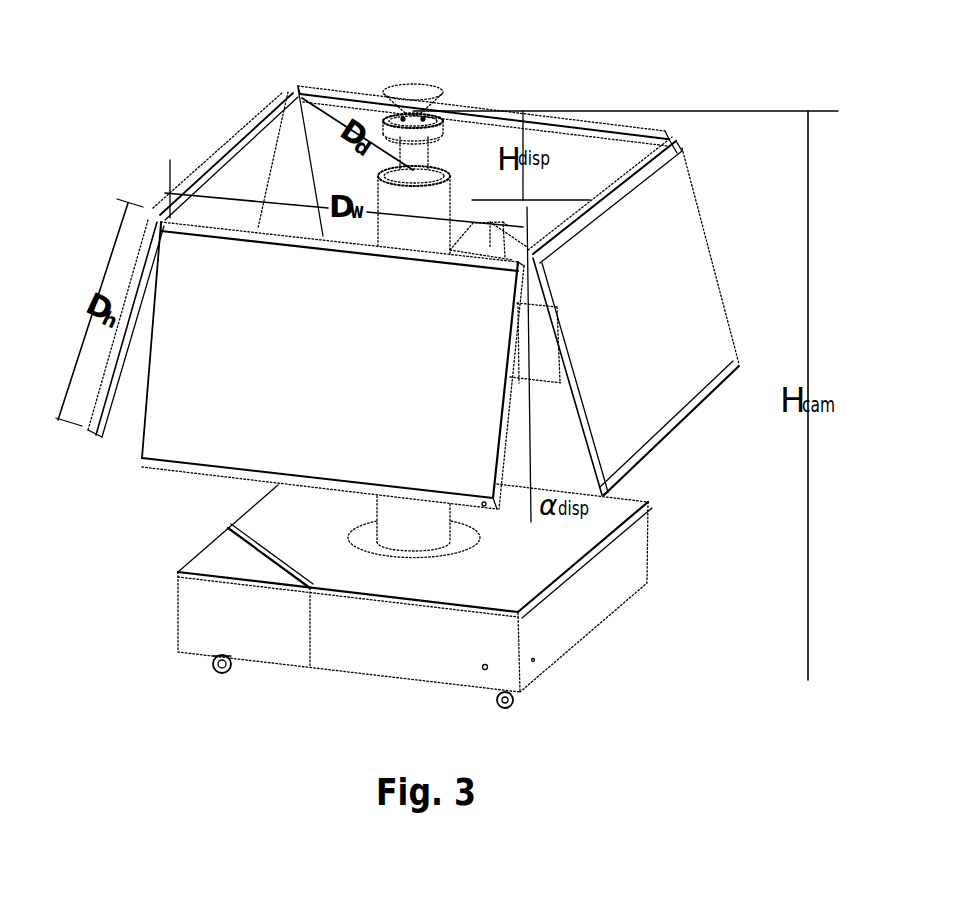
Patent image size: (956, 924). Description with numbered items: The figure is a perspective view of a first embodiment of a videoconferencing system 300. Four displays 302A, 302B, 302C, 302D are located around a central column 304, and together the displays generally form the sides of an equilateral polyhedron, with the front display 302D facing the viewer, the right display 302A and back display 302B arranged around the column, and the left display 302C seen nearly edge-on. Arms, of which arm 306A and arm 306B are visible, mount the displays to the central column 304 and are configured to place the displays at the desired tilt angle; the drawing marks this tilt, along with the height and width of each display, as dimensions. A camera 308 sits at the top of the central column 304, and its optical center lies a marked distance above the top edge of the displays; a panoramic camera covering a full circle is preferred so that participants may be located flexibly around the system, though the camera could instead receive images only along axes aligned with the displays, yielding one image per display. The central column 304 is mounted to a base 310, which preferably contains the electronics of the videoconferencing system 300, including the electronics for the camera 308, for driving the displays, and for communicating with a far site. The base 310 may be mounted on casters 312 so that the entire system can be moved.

The videoconferencing system 300 is at (653, 768).
The display 302A is at (724, 317).
The display 302B is at (590, 118).
The display 302C is at (222, 148).
The display 302D is at (220, 478).
The central column 304 is at (450, 187).
The arm 306A is at (543, 381).
The arm 306B is at (507, 241).
The camera 308 is at (417, 82).
The base 310 is at (603, 620).
The casters 312 is at (492, 698).